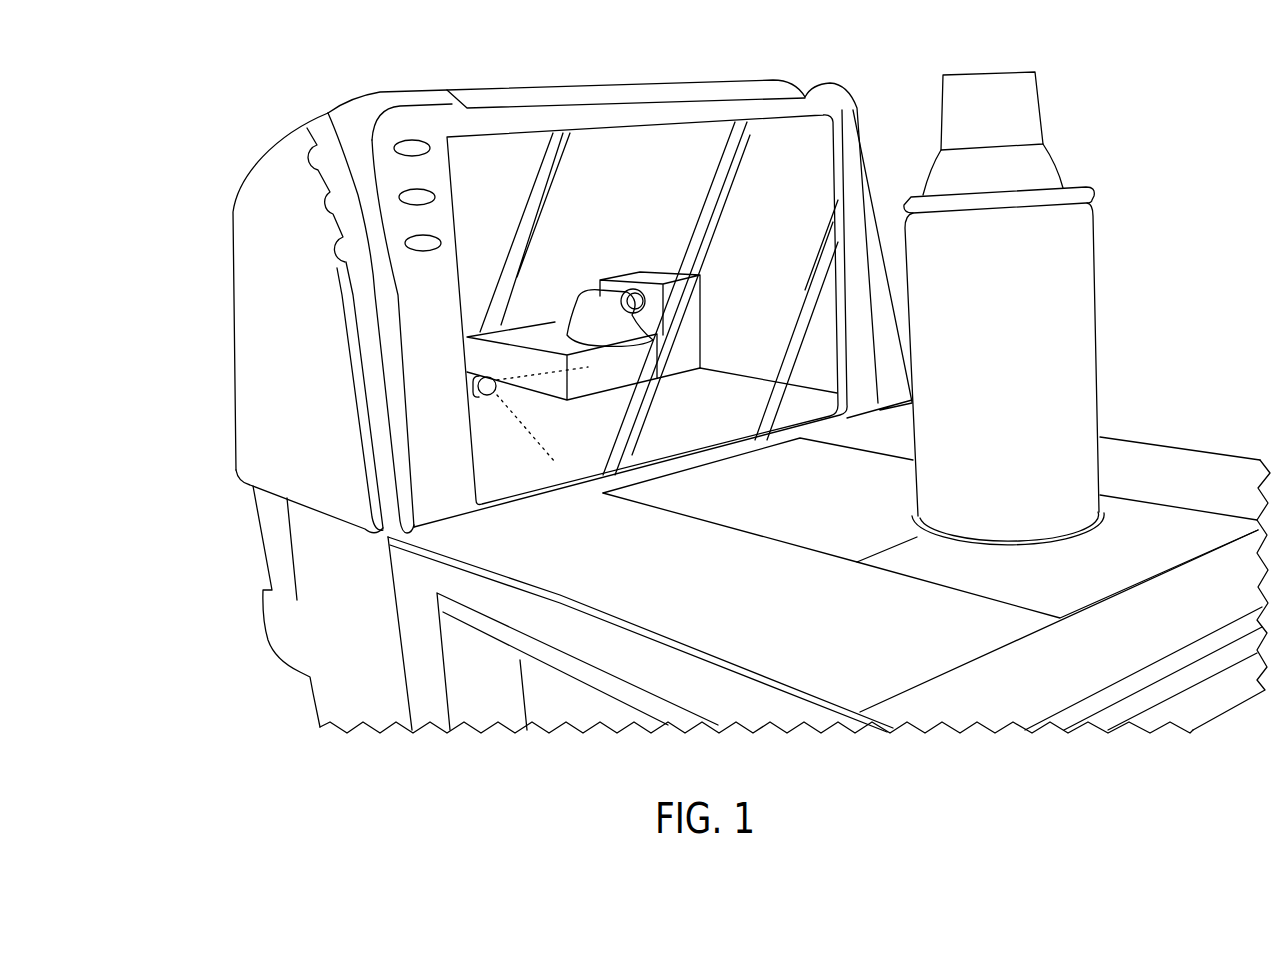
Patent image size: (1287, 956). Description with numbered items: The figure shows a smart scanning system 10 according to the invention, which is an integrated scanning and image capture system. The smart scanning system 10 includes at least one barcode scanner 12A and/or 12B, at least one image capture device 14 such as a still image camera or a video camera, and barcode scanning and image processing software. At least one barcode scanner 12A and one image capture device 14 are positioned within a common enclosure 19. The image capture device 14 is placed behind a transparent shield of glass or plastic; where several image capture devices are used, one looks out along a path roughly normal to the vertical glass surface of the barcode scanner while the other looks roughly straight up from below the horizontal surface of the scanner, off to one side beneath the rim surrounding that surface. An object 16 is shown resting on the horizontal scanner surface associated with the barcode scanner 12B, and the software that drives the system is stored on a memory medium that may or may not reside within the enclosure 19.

The smart scanning system 10 is at (194, 197).
The common enclosure 19 is at (582, 113).
The barcode scanner 12A is at (638, 310).
The barcode scanner 12B is at (730, 510).
The image capture device 14 is at (496, 392).
The bottle / container 16 is at (1082, 324).